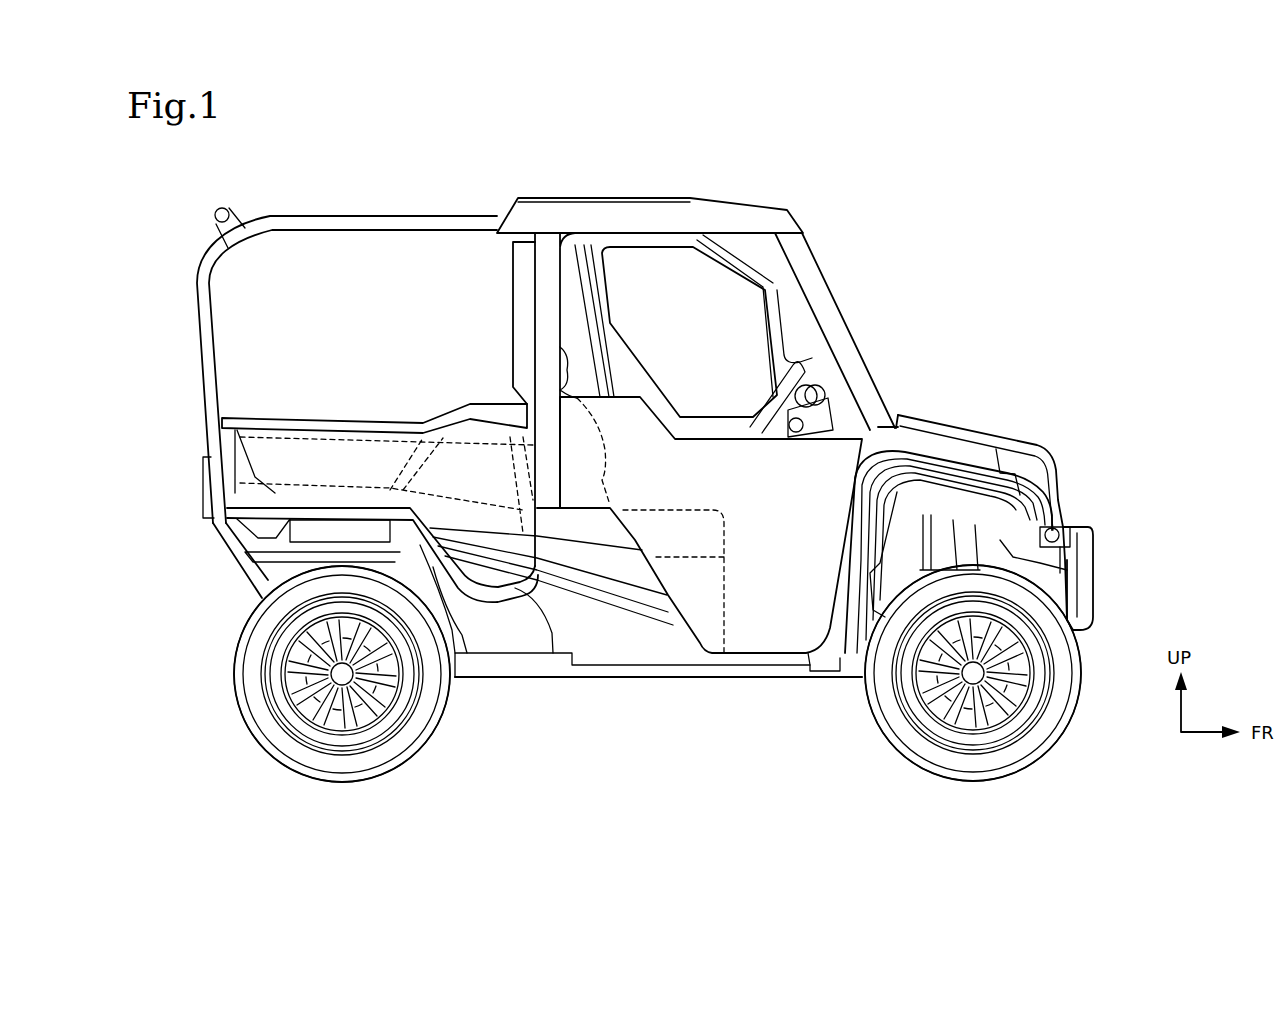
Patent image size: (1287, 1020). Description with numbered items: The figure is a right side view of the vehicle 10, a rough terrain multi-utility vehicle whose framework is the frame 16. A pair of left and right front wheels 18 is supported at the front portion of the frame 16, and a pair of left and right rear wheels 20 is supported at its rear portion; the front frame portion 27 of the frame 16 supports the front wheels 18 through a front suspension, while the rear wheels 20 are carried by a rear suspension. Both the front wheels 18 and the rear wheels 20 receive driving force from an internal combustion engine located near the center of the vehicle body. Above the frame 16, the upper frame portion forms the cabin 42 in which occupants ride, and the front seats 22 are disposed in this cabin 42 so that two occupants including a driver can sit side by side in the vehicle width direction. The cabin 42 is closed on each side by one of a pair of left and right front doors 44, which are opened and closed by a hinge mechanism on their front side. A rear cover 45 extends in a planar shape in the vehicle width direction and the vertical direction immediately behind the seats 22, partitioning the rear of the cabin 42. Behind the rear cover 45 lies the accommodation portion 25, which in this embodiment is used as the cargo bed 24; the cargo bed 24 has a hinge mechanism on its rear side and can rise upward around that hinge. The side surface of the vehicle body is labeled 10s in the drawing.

The vehicle 10 is at (957, 210).
The side surface of vehicle body 10s is at (586, 612).
The frame 16 is at (648, 677).
The front wheels 18 is at (1057, 733).
The rear wheels 20 is at (263, 737).
The front seats 22 is at (605, 450).
The cargo bed 24 is at (306, 443).
The accommodation portion 25 is at (395, 331).
The front frame portion 27 is at (847, 677).
The cabin 42 is at (675, 322).
The front doors 44 is at (803, 478).
The rear cover 45 is at (512, 297).